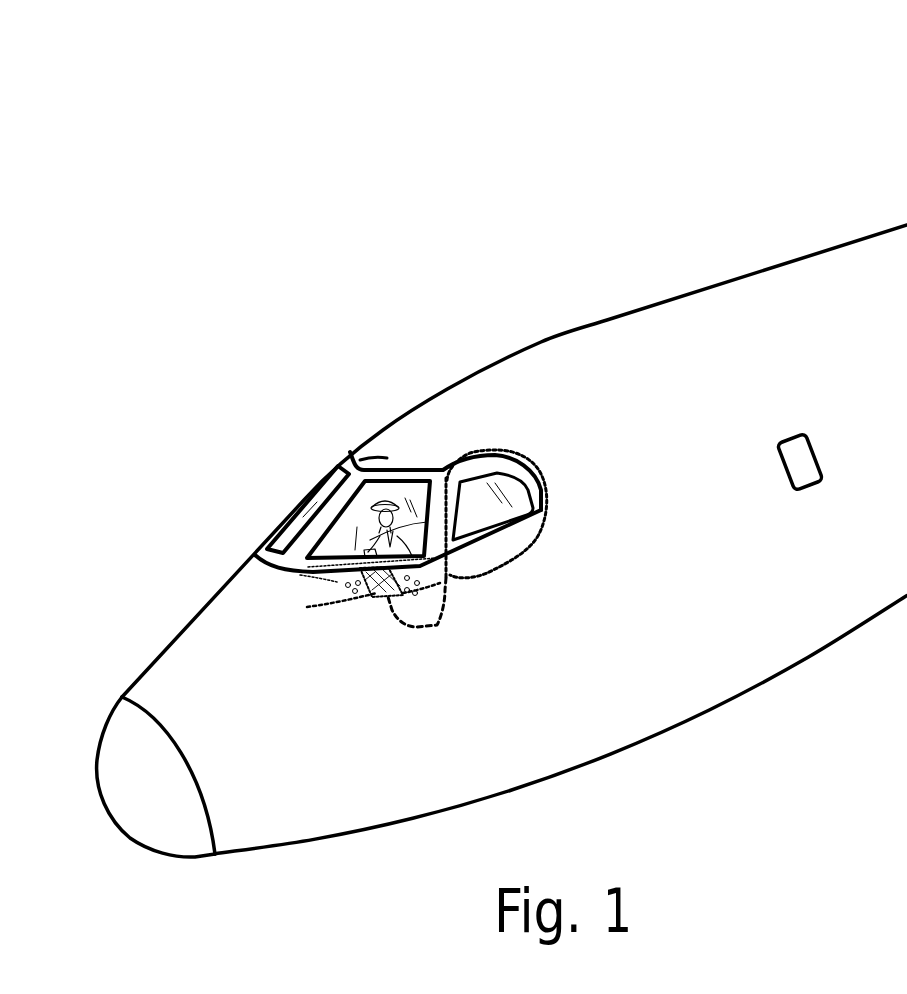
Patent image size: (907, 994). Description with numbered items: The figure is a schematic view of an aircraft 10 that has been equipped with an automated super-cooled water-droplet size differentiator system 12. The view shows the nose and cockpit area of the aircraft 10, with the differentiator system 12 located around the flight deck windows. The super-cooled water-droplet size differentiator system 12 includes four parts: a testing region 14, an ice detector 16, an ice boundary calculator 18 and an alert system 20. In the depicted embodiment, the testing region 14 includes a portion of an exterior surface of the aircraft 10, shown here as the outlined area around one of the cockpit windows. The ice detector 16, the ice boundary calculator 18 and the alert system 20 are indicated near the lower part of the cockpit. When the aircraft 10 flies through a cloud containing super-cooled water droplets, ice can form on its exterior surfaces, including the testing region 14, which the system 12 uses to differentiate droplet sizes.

The aircraft 10 is at (322, 378).
The super-cooled water-droplet size differentiator system 12 is at (565, 577).
The testing region 14 is at (540, 468).
The ice detector 16 is at (448, 569).
The ice boundary calculator 18 is at (383, 592).
The alert system 20 is at (337, 582).